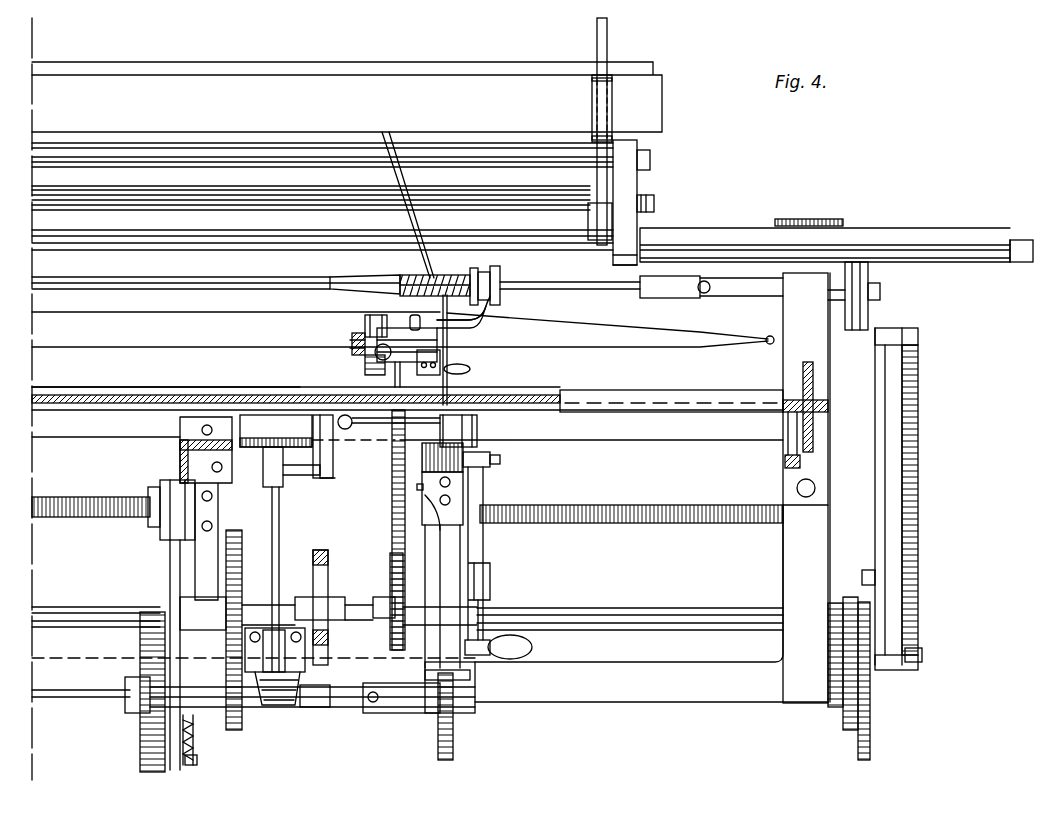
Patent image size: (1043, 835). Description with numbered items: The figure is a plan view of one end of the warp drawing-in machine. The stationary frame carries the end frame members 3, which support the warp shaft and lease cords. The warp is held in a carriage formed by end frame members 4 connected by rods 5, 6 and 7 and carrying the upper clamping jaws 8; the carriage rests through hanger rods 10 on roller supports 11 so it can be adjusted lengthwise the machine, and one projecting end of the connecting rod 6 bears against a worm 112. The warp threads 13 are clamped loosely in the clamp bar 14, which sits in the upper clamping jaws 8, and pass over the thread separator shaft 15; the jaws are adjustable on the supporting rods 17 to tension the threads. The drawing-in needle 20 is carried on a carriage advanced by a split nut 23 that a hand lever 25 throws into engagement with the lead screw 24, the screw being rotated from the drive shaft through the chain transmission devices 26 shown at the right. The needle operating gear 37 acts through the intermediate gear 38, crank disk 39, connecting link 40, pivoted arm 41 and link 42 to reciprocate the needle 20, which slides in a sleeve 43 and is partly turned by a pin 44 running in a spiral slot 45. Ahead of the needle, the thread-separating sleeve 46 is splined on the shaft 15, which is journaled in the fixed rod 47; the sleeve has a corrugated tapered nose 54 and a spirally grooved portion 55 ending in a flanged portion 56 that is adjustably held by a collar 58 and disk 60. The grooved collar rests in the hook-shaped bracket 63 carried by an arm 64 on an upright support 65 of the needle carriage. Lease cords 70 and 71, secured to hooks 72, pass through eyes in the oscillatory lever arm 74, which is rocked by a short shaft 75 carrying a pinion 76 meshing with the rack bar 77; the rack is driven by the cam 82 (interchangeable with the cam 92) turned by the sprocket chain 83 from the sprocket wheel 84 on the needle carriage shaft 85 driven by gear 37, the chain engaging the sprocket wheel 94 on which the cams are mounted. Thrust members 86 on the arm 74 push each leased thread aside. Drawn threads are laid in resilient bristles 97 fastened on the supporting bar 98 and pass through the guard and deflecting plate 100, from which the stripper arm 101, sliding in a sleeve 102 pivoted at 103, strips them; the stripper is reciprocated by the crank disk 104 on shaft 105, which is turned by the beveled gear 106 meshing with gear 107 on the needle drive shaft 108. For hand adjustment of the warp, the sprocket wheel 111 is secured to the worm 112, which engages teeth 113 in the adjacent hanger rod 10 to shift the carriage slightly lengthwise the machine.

The end frame members 3 is at (815, 409).
The end frame members 4 is at (636, 184).
The rod 5 is at (535, 213).
The connecting rod 6 is at (580, 250).
The rod 7 is at (488, 165).
The upper clamping jaws 8 is at (608, 80).
The hanger rods 10 is at (697, 232).
The roller supports 11 is at (812, 221).
The warp threads 13 is at (398, 180).
The clamp bar 14 is at (398, 88).
The thread separator shaft 15 is at (86, 288).
The supporting rods 17 is at (603, 36).
The drawing-in needle 20 is at (448, 381).
The split nut 23 is at (170, 478).
The lead screw 24 is at (74, 504).
The hand lever 25 is at (700, 612).
The chain transmission devices 26 is at (918, 584).
The needle operating gear 37 is at (240, 542).
The intermediate gear 38 is at (242, 728).
The crank disk 39 is at (453, 742).
The connecting link 40 is at (480, 610).
The pivoted arm 41 is at (488, 562).
The link 42 is at (478, 499).
The sleeve 43 is at (430, 566).
The pin 44 is at (416, 490).
The partially spiral slot 45 is at (432, 518).
The sleeve member 46 is at (330, 282).
The rod 47 is at (724, 290).
The corrugated tapered nose 54 is at (366, 278).
The spirally grooved portion 55 is at (427, 273).
The flanged portion 56 is at (468, 274).
The collar 58 is at (500, 274).
The disk 60 is at (502, 282).
The hook-shaped bracket 63 is at (484, 272).
The arm 64 is at (487, 318).
The upright support 65 is at (409, 320).
The lease cord 70 is at (571, 328).
The lease cord 71 is at (620, 342).
The hooks 72 is at (768, 345).
The oscillatory lever arm 74 is at (426, 364).
The short shaft 75 is at (353, 337).
The pinion 76 is at (350, 346).
The rack bar 77 is at (375, 355).
The cam 82 is at (368, 316).
The sprocket chain 83 is at (392, 562).
The sprocket wheel 84 is at (392, 626).
The needle carriage shaft 85 is at (286, 602).
The thrust members 86 is at (456, 322).
The cam 92 is at (366, 322).
The sprocket wheel 94 is at (400, 333).
The resilient bristles 97 is at (80, 388).
The supporting bar 98 is at (544, 389).
The guard and deflecting plate 100 is at (478, 424).
The stripper arm 101 is at (385, 424).
The sleeve 102 is at (333, 432).
The pivot 103 is at (330, 478).
The crank disk 104 is at (263, 448).
The shaft 105 is at (282, 532).
The beveled gear 106 is at (290, 704).
The gear 107 is at (332, 708).
The needle drive shaft 108 is at (306, 696).
The sprocket wheel 111 is at (838, 332).
The worm 112 is at (866, 322).
The teeth 113 is at (902, 262).